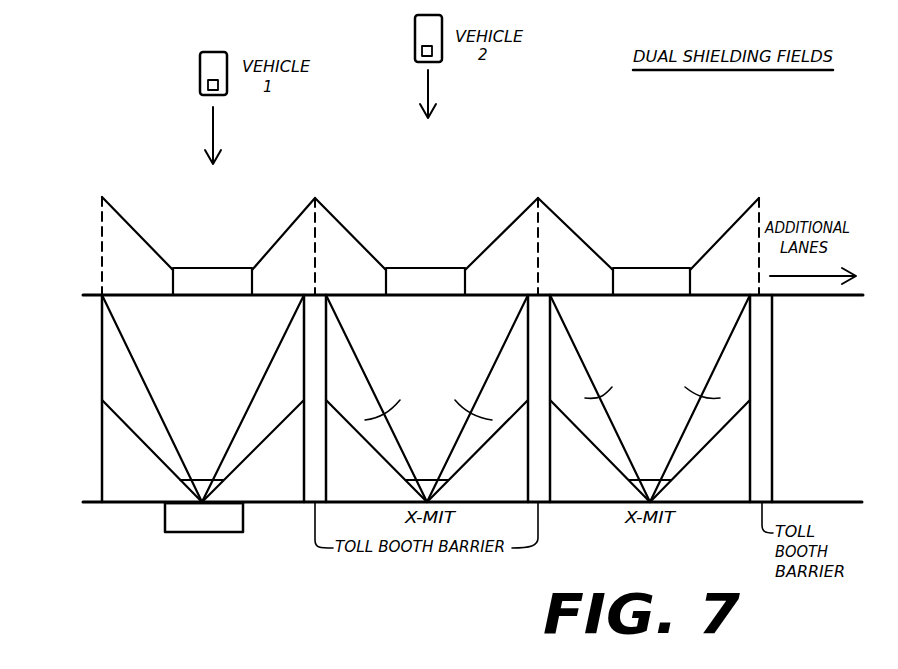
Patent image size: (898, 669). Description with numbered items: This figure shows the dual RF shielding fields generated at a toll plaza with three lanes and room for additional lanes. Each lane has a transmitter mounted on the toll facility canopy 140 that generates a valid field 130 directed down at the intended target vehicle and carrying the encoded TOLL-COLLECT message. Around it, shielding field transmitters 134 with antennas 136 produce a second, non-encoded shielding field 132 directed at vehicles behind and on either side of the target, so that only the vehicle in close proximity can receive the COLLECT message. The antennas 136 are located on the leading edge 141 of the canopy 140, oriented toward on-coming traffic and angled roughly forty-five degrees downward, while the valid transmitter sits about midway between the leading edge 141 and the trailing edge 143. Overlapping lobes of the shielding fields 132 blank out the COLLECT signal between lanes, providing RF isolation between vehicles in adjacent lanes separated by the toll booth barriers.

The valid field 130 is at (426, 398).
The shielding field 132 is at (221, 251).
The shielding field transmitter 134 is at (243, 520).
The shielding field antenna 136 is at (165, 503).
The toll facility canopy 140 is at (102, 383).
The leading edge 141 is at (102, 295).
The trailing edge 143 is at (102, 502).